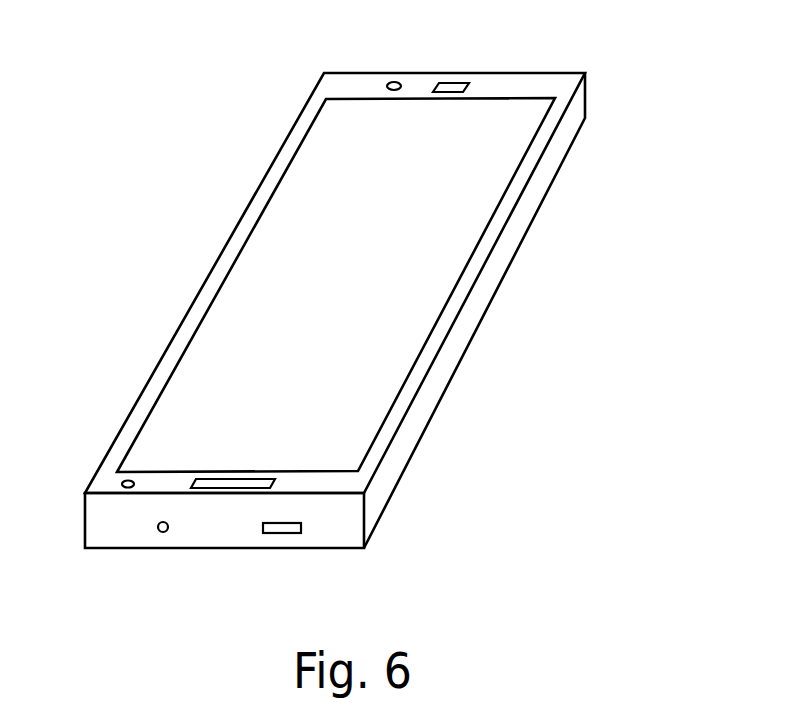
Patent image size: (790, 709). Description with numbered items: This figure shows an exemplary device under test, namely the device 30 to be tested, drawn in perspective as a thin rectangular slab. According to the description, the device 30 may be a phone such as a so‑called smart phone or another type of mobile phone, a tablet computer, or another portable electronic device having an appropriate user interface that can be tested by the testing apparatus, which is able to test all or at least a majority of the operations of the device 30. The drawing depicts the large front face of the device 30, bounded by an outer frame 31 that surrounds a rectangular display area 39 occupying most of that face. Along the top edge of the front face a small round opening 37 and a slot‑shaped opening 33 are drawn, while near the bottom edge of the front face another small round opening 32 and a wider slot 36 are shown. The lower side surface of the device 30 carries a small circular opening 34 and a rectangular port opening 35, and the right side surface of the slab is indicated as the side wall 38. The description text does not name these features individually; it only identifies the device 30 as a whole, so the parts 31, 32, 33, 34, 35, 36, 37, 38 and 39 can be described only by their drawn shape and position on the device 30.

The device to be tested 30 is at (654, 67).
The housing 31 is at (155, 396).
The front camera 32 is at (124, 482).
The speaker 33 is at (458, 83).
The microphone 34 is at (163, 533).
The connector port 35 is at (283, 534).
The speaker opening 36 is at (229, 489).
The sensor 37 is at (394, 81).
The sidewall 38 is at (582, 165).
The display 39 is at (193, 359).